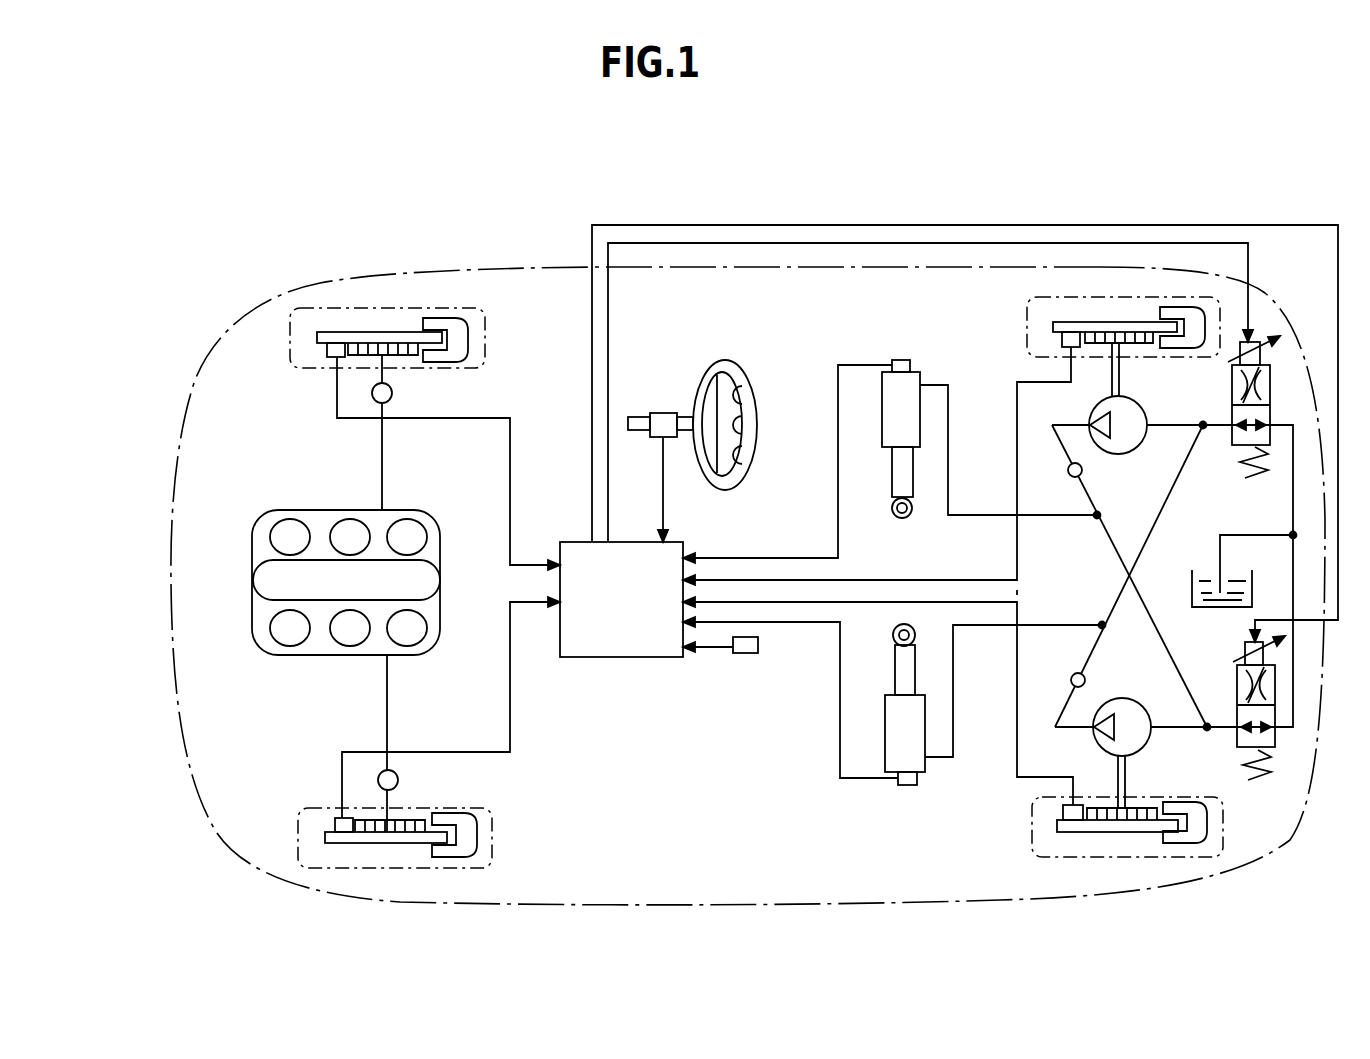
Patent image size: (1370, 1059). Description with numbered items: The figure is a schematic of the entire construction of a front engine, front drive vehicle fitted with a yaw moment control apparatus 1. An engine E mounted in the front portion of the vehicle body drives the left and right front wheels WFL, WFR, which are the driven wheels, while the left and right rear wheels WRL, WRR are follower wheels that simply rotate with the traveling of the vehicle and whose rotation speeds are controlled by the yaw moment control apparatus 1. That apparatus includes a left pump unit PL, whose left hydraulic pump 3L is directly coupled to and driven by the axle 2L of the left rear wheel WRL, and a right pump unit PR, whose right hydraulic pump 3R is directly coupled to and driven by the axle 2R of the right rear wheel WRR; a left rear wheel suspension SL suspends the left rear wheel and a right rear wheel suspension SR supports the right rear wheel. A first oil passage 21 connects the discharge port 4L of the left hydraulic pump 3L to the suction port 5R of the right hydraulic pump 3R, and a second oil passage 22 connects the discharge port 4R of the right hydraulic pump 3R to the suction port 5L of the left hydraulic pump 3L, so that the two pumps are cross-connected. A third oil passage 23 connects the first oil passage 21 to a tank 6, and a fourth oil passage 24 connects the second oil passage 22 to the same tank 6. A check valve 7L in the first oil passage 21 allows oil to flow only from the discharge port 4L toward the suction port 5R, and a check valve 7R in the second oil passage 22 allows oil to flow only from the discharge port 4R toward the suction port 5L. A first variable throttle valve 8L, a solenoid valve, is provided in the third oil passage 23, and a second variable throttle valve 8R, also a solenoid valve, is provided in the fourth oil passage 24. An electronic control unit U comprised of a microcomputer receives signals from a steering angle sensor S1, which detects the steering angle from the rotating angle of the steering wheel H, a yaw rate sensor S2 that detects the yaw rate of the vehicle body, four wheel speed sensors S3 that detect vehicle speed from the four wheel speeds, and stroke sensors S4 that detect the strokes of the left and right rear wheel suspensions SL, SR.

The yaw moment control apparatus 1 is at (1022, 658).
The engine E is at (280, 500).
The steering wheel H is at (742, 380).
The electronic control unit U is at (632, 616).
The steering angle sensor S1 is at (660, 413).
The yaw rate sensor S2 is at (748, 655).
The wheel speed sensor S3 is at (1063, 811).
The stroke sensor S4 is at (868, 815).
The right rear wheel suspension SR is at (905, 346).
The left rear wheel suspension SL is at (907, 802).
The right pump unit PR is at (1075, 446).
The left pump unit PL is at (1068, 712).
The right front wheel WFR is at (292, 340).
The left front wheel WFL is at (298, 838).
The right rear wheel WRR is at (1030, 330).
The left rear wheel WRL is at (1032, 828).
The axle of the right rear wheel 2R is at (1120, 385).
The axle of the left rear wheel 2L is at (1126, 776).
The right hydraulic pump 3R is at (1125, 455).
The left hydraulic pump 3L is at (1122, 698).
The discharge port of the right hydraulic pump 4R is at (1088, 424).
The discharge port of the left hydraulic pump 4L is at (1092, 730).
The suction port of the right hydraulic pump 5R is at (1150, 418).
The suction port of the left hydraulic pump 5L is at (1155, 740).
The tank 6 is at (1190, 590).
The check valve 7R is at (1072, 480).
The check valve 7L is at (1070, 682).
The first variable throttle valve 8L is at (1270, 378).
The second variable throttle valve 8R is at (1276, 748).
The first oil passage 21 is at (1190, 462).
The second oil passage 22 is at (1160, 618).
The third oil passage 23 is at (1290, 492).
The fourth oil passage 24 is at (1290, 555).